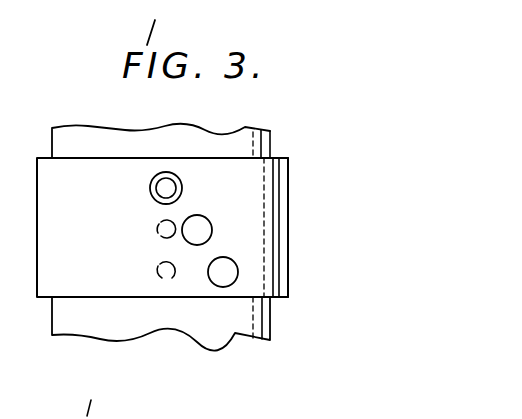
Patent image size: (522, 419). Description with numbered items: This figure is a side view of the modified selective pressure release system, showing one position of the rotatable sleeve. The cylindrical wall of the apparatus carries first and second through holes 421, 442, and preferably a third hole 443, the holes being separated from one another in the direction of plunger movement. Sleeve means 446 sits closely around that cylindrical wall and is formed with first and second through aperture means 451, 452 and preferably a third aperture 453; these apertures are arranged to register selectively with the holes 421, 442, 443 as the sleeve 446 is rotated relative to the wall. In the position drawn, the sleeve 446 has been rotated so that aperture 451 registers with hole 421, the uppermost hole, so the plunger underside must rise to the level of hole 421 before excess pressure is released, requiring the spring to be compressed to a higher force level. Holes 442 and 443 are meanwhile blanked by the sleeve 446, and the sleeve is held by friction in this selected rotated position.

The first through hole 421 is at (170, 177).
The second through hole 442 is at (160, 228).
The third through hole 443 is at (167, 279).
The sleeve means 446 is at (289, 159).
The first through aperture means 451 is at (158, 176).
The second through aperture means 452 is at (200, 221).
The third aperture 453 is at (222, 263).